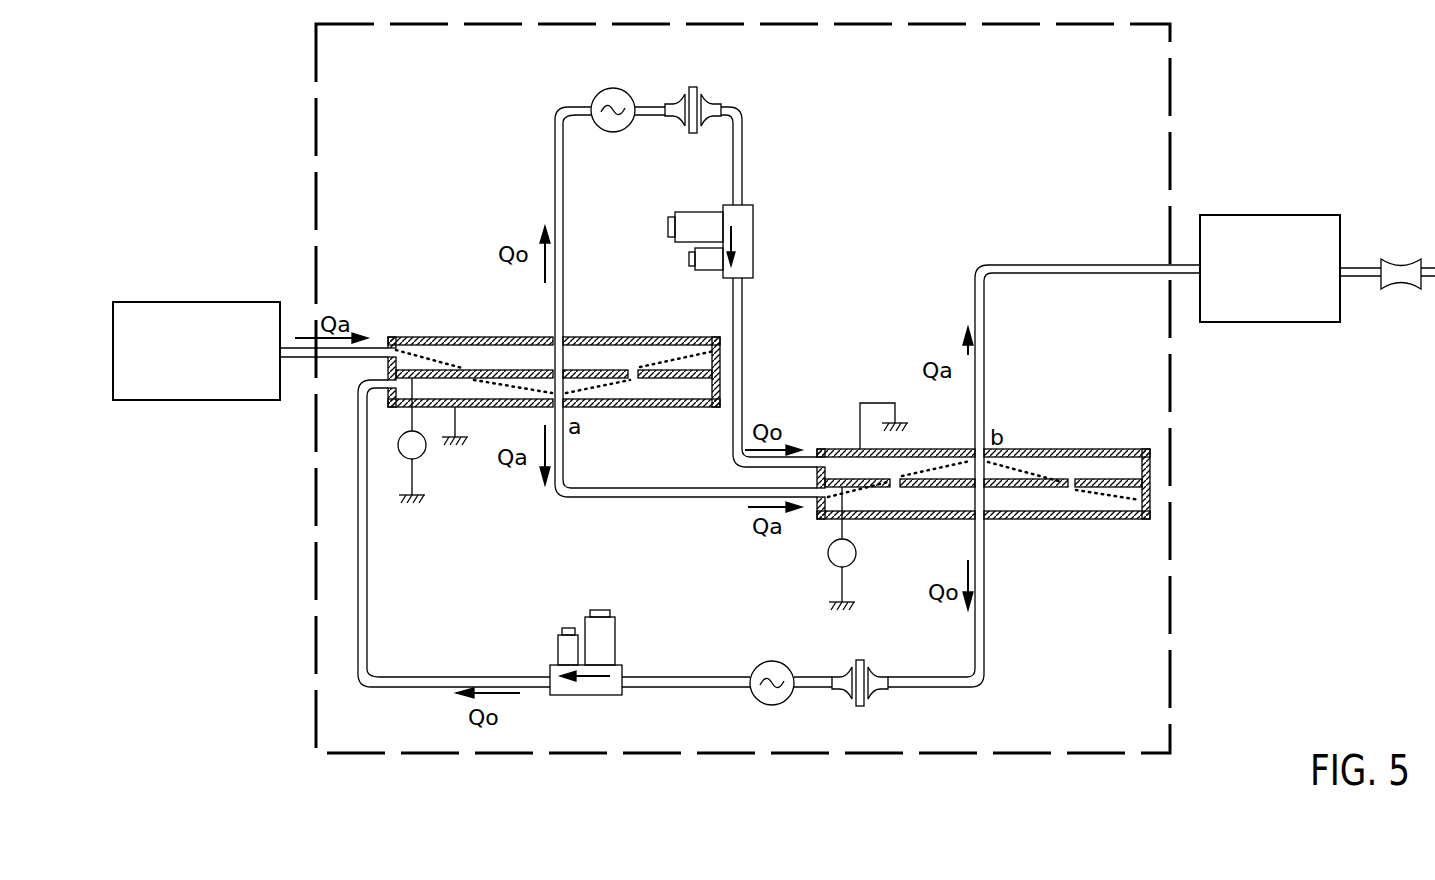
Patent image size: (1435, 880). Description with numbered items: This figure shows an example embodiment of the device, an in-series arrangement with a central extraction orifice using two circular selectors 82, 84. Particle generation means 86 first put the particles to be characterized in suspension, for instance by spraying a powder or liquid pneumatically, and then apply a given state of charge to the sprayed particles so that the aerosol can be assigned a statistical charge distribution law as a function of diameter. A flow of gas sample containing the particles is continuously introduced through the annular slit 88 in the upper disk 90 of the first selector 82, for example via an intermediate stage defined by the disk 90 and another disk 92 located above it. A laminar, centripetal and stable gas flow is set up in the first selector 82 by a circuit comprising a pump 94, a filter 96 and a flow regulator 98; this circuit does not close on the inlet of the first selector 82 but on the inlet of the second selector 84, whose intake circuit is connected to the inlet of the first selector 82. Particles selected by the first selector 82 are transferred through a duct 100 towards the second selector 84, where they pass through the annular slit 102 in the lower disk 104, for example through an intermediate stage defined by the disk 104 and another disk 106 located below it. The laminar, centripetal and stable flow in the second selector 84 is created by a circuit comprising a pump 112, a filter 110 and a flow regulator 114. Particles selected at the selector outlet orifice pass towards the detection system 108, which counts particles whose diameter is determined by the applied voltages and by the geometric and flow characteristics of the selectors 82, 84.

The first circular selector 82 is at (554, 395).
The second circular selector 84 is at (983, 506).
The particle generation means 86 is at (200, 300).
The annular slit 88 is at (470, 370).
The upper disk 90 is at (588, 362).
The disk 92 is at (440, 337).
The pump 94 is at (596, 88).
The filter 96 is at (708, 90).
The flow regulator 98 is at (693, 212).
The duct 100 is at (607, 498).
The annular slit 102 is at (1068, 519).
The lower disk 104 is at (1025, 480).
The disk 106 is at (940, 519).
The detection system 108 is at (1255, 213).
The filter 110 is at (872, 705).
The pump 112 is at (762, 705).
The flow regulator 114 is at (620, 642).